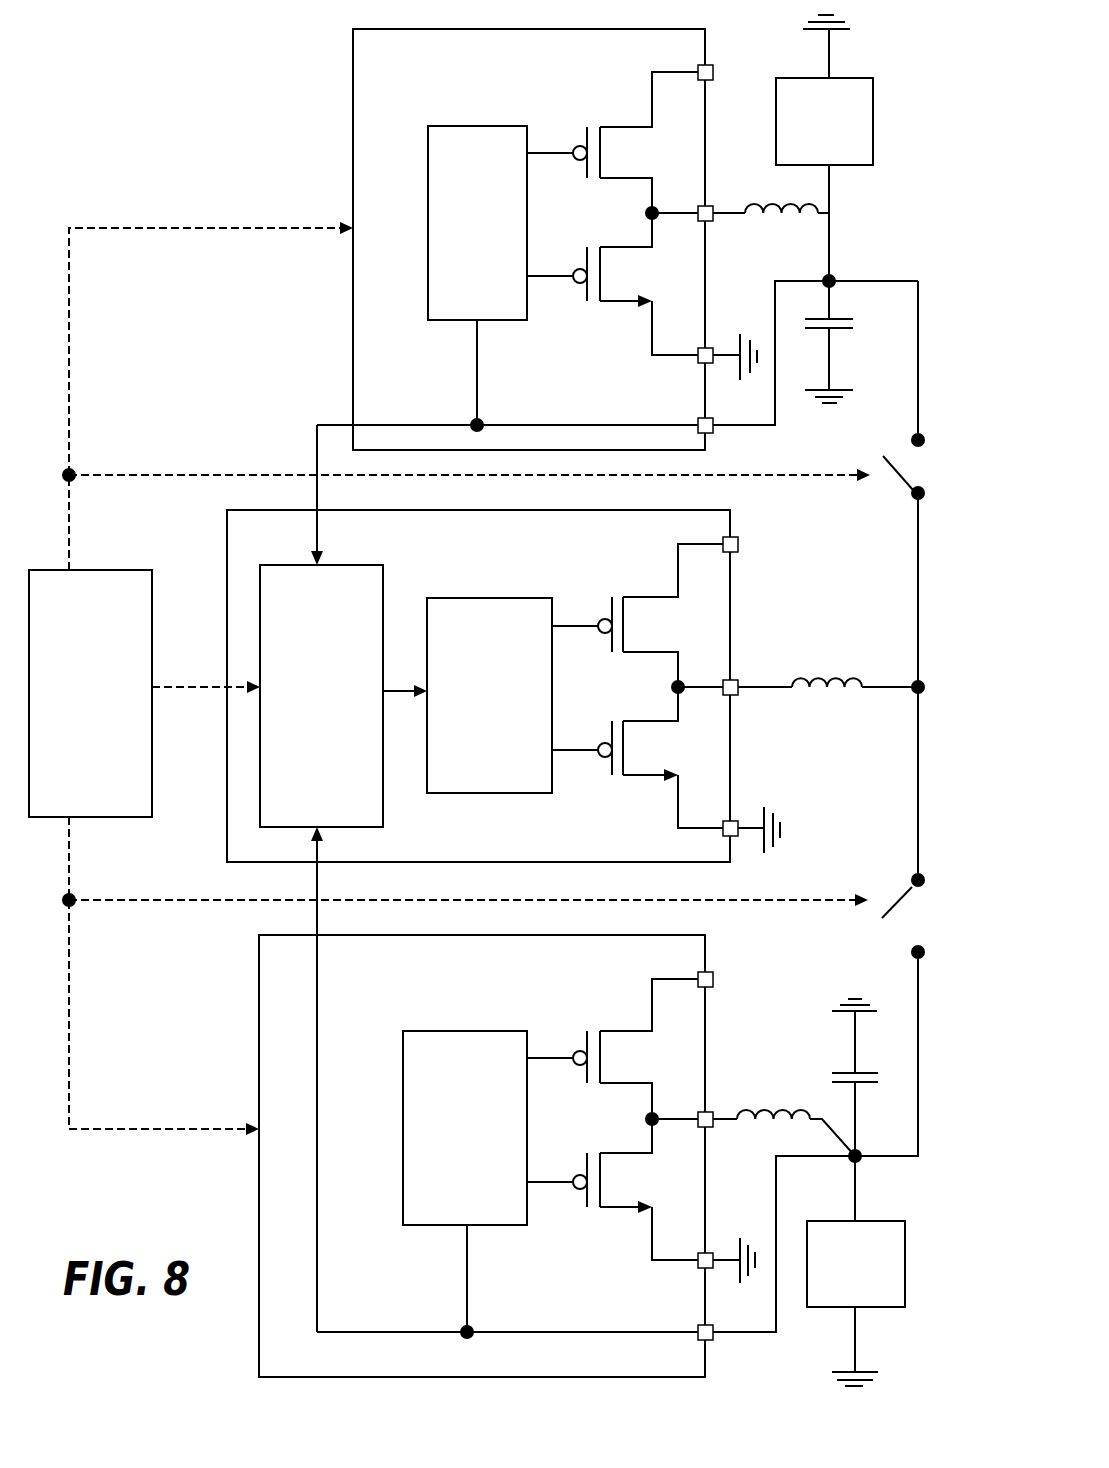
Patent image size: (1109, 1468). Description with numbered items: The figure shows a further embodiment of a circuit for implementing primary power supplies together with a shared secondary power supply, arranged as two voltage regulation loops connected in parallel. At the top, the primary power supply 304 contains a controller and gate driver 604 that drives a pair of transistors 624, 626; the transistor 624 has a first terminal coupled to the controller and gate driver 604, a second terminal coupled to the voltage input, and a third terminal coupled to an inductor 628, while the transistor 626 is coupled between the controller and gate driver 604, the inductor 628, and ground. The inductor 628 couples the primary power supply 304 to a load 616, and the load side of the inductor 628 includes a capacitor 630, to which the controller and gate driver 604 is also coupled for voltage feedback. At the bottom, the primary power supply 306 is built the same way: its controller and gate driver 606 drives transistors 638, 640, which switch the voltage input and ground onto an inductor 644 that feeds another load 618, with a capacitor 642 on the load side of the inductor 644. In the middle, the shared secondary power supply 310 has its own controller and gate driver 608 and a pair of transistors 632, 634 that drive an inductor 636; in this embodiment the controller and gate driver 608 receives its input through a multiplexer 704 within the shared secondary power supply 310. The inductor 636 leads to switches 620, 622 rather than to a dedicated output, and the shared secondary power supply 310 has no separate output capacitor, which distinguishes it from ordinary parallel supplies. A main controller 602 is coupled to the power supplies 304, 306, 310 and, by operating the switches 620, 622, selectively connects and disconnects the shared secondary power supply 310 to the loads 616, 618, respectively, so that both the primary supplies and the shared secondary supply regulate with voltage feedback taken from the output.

The primary power supply 304 is at (525, 100).
The primary power supply 306 is at (513, 1007).
The shared secondary power supply 310 is at (660, 572).
The main controller 602 is at (70, 734).
The controller and gate driver 604 is at (458, 277).
The controller and gate driver 606 is at (446, 1182).
The controller and gate driver 608 is at (470, 751).
The load 616 is at (807, 146).
The load 618 is at (837, 1289).
The switch 620 is at (884, 390).
The switch 622 is at (885, 916).
The transistor 624 is at (612, 142).
The transistor 626 is at (612, 284).
The inductor 628 is at (771, 223).
The capacitor 630 is at (843, 342).
The transistor 632 is at (637, 615).
The transistor 634 is at (637, 757).
The inductor 636 is at (828, 665).
The transistor 638 is at (612, 1049).
The transistor 640 is at (612, 1189).
The capacitor 642 is at (840, 1077).
The inductor 644 is at (784, 1118).
The multiplexer 704 is at (303, 724).